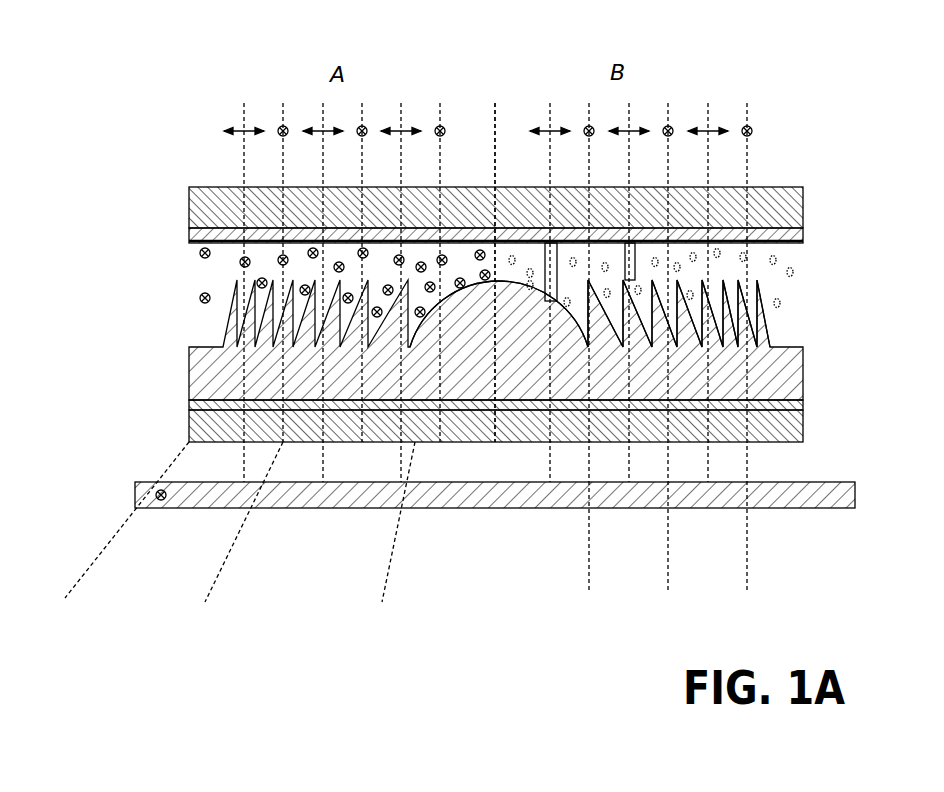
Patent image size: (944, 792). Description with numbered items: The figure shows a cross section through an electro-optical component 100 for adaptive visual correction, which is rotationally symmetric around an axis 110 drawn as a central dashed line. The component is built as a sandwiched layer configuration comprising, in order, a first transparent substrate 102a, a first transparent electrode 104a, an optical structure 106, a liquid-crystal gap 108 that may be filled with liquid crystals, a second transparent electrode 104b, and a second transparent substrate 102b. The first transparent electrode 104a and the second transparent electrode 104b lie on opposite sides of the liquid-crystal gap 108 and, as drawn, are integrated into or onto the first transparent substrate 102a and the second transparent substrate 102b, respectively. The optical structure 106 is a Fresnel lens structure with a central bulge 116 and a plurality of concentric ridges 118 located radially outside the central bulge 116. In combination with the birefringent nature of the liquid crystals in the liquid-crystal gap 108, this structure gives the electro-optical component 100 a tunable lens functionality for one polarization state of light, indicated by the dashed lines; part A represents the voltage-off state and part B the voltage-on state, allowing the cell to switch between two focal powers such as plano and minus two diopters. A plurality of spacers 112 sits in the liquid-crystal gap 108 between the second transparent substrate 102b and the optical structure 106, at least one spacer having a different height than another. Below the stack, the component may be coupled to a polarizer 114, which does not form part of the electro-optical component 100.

The electro-optical component 100 is at (133, 199).
The first transparent substrate 102a is at (157, 434).
The second transparent substrate 102b is at (190, 171).
The first transparent electrode 104a is at (190, 404).
The second transparent electrode 104b is at (189, 235).
The optical structure 106 is at (200, 373).
The liquid-crystal gap 108 is at (805, 290).
The axis 110 is at (497, 181).
The spacers 112 is at (545, 277).
The polarizer 114 is at (300, 495).
The central bulge 116 is at (477, 313).
The concentric ridges 118 is at (684, 340).